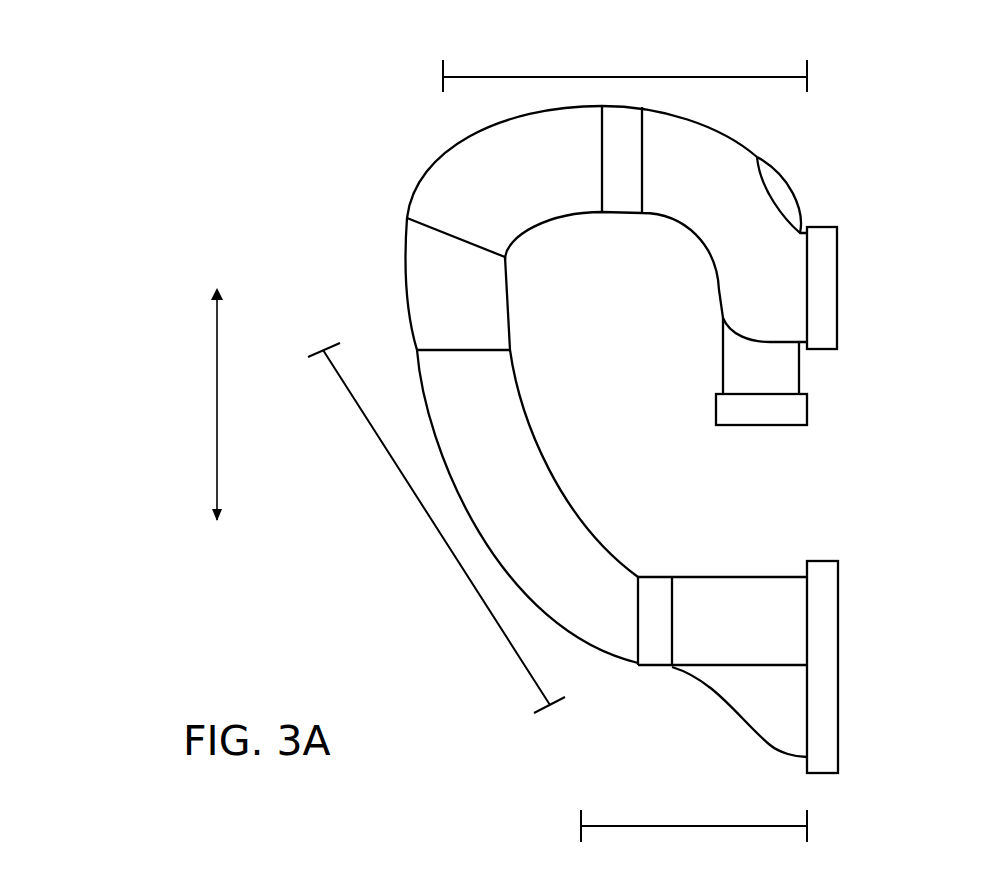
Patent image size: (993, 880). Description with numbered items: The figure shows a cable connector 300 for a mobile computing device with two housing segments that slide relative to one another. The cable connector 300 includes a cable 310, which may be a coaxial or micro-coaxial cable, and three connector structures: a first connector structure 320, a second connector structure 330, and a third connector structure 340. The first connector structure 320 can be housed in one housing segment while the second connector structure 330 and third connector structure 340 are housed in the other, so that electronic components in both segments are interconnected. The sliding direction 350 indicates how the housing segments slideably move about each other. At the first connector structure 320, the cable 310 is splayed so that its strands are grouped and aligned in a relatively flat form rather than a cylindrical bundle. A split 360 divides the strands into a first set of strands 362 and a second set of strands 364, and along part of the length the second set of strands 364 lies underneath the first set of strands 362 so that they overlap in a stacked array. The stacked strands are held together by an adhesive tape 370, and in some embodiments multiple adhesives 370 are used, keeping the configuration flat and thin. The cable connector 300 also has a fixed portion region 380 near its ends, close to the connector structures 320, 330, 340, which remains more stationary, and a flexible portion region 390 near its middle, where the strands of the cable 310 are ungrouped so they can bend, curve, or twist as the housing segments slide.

The cable connector 300 is at (870, 73).
The cable 310 is at (538, 562).
The first connector structure 320 is at (820, 588).
The second connector structure 330 is at (820, 278).
The third connector structure 340 is at (767, 409).
The sliding direction 350 is at (216, 449).
The split 360 is at (763, 665).
The first set of strands 362 is at (752, 197).
The second set of strands 364 is at (765, 712).
The adhesive tape 370 is at (620, 158).
The fixed portion region 380 is at (625, 453).
The flexible portion region 390 is at (436, 528).